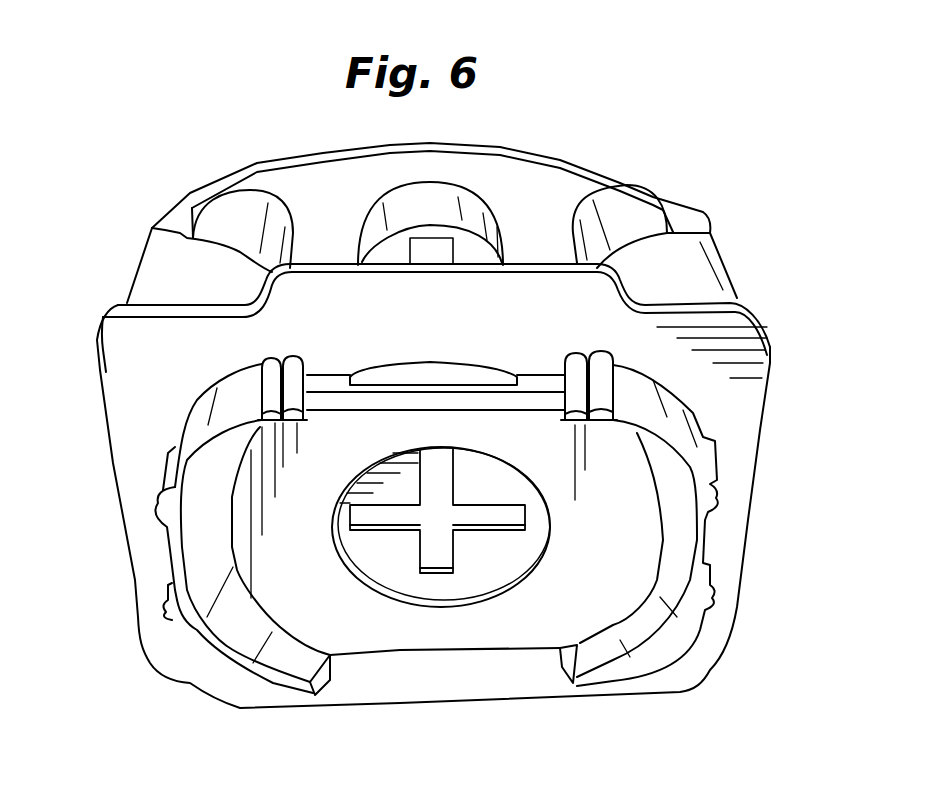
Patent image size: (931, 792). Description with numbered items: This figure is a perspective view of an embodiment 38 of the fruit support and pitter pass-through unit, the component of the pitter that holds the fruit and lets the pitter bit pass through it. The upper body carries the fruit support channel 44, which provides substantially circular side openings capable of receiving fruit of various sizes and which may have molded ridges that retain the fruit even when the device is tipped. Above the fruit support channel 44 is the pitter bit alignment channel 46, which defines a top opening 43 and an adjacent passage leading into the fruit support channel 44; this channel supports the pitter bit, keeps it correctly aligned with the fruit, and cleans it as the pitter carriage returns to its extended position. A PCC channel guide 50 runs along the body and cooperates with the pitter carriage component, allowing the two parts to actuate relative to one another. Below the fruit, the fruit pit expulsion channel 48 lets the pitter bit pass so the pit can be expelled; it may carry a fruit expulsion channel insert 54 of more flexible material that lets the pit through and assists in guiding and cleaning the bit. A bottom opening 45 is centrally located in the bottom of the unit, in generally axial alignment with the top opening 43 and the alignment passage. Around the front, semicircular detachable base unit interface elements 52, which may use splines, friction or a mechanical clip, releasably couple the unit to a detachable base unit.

The first embodiment 38 is at (742, 252).
The top opening 43 is at (417, 247).
The fruit support channel 44 is at (540, 192).
The bottom opening 45 is at (442, 560).
The pitter bit alignment channel 46 is at (435, 207).
The fruit pit expulsion channel 48 is at (393, 578).
The PCC channel guide 50 is at (345, 300).
The detachable base unit interface element 52 is at (640, 407).
The fruit expulsion channel insert 54 is at (483, 557).